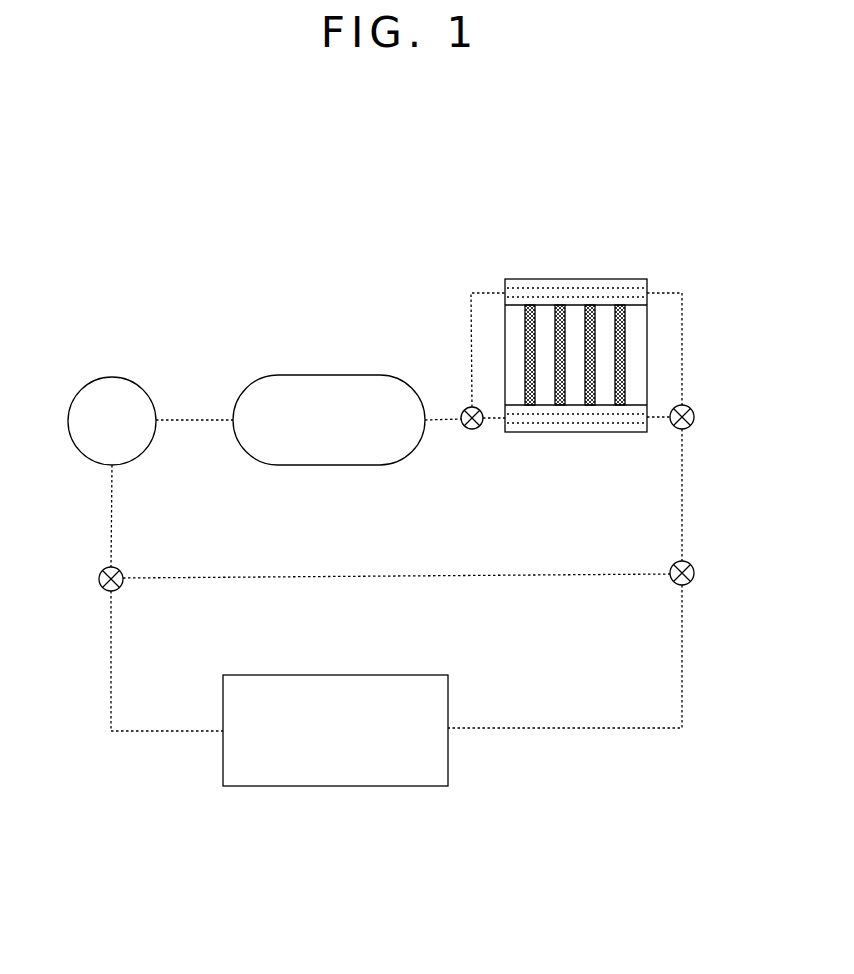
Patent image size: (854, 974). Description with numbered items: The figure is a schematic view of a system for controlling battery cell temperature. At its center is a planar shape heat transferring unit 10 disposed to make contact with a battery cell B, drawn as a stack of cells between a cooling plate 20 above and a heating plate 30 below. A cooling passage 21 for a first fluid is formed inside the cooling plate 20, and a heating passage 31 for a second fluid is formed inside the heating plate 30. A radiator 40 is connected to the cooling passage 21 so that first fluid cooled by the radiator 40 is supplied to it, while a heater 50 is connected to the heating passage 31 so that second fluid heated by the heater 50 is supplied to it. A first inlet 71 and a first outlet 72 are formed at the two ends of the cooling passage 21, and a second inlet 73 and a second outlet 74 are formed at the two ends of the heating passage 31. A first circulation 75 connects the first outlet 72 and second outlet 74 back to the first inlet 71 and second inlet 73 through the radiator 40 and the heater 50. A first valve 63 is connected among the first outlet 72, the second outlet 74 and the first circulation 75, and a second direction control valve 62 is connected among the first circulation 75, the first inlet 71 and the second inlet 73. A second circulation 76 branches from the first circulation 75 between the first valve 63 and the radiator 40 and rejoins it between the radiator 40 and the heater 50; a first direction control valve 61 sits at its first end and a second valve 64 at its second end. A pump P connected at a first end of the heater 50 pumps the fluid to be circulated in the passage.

The pump P is at (112, 377).
The heater 50 is at (328, 375).
The planar shape heat transferring unit 10 is at (623, 355).
The battery cell B is at (630, 362).
The cooling plate 20 is at (573, 279).
The cooling passage 21 is at (531, 289).
The heating plate 30 is at (577, 432).
The heating passage 31 is at (622, 424).
The radiator 40 is at (336, 787).
The first direction control valve 61 is at (695, 574).
The second direction control valve 62 is at (472, 430).
The first valve 63 is at (695, 416).
The second valve 64 is at (99, 579).
The first inlet 71 is at (469, 328).
The first outlet 72 is at (661, 293).
The second inlet 73 is at (492, 420).
The second outlet 74 is at (657, 420).
The first circulation 75 is at (684, 658).
The second circulation 76 is at (396, 577).